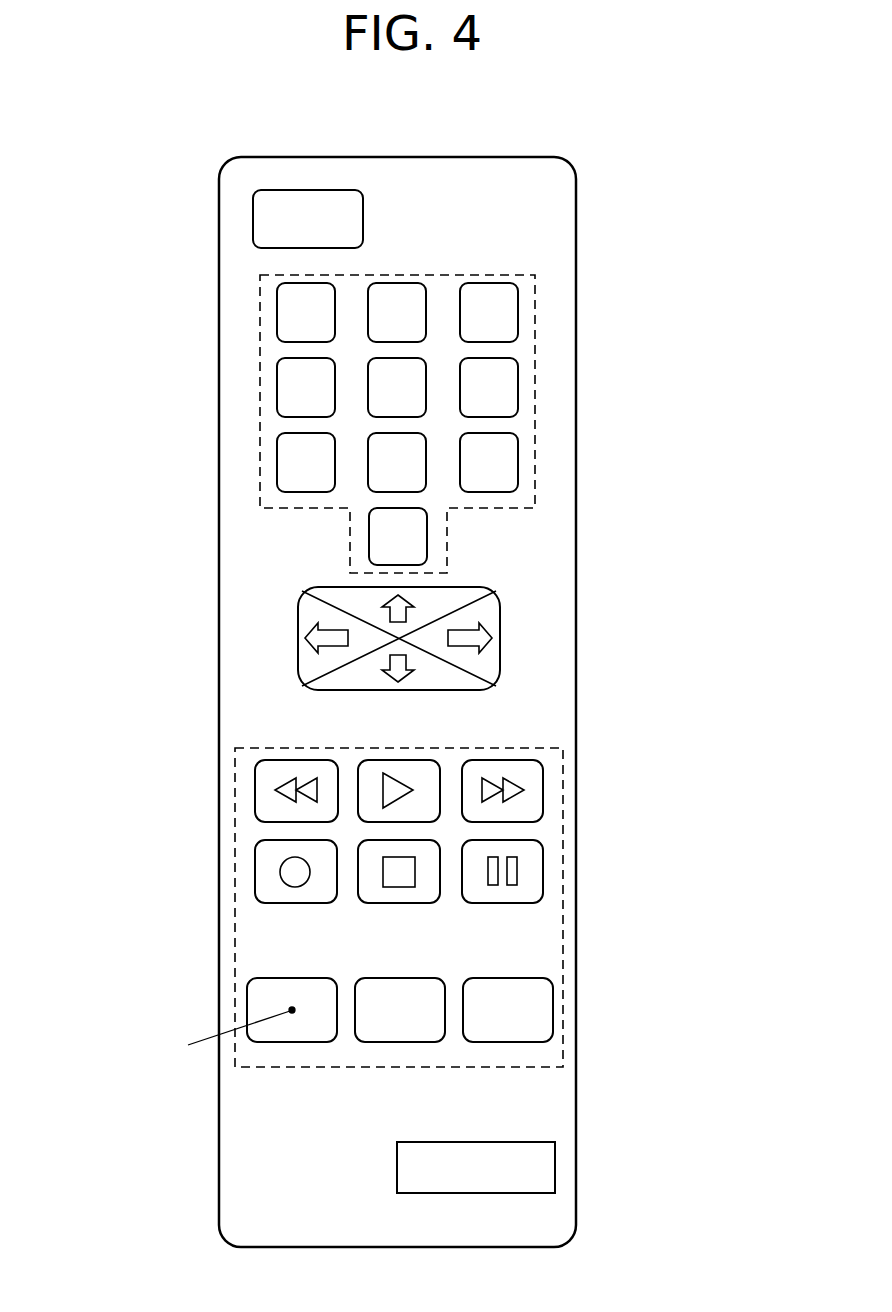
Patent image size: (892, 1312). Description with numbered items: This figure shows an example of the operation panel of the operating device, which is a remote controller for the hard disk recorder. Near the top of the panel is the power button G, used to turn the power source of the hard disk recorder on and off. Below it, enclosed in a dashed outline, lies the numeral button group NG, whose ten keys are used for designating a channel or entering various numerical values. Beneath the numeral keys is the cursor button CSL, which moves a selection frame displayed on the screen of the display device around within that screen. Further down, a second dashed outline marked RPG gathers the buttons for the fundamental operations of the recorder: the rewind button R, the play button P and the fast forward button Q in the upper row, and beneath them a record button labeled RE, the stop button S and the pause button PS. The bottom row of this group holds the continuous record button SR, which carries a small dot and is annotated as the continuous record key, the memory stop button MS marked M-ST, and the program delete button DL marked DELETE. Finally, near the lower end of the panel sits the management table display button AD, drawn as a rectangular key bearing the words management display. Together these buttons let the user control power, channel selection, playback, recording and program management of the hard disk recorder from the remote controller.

The power button G is at (363, 203).
The numeral button group NG is at (510, 275).
The cursor button CSL is at (470, 587).
The reproduction key group RPG is at (550, 747).
The rewind button R is at (323, 759).
The play button P is at (426, 759).
The fast forward button Q is at (520, 759).
The record key RE is at (320, 904).
The stop button S is at (420, 904).
The pause button PS is at (522, 904).
The continuous record button SR is at (320, 1043).
The memory stop button MS is at (425, 1043).
The program delete button DL is at (530, 1043).
The management table display button AD is at (397, 1153).